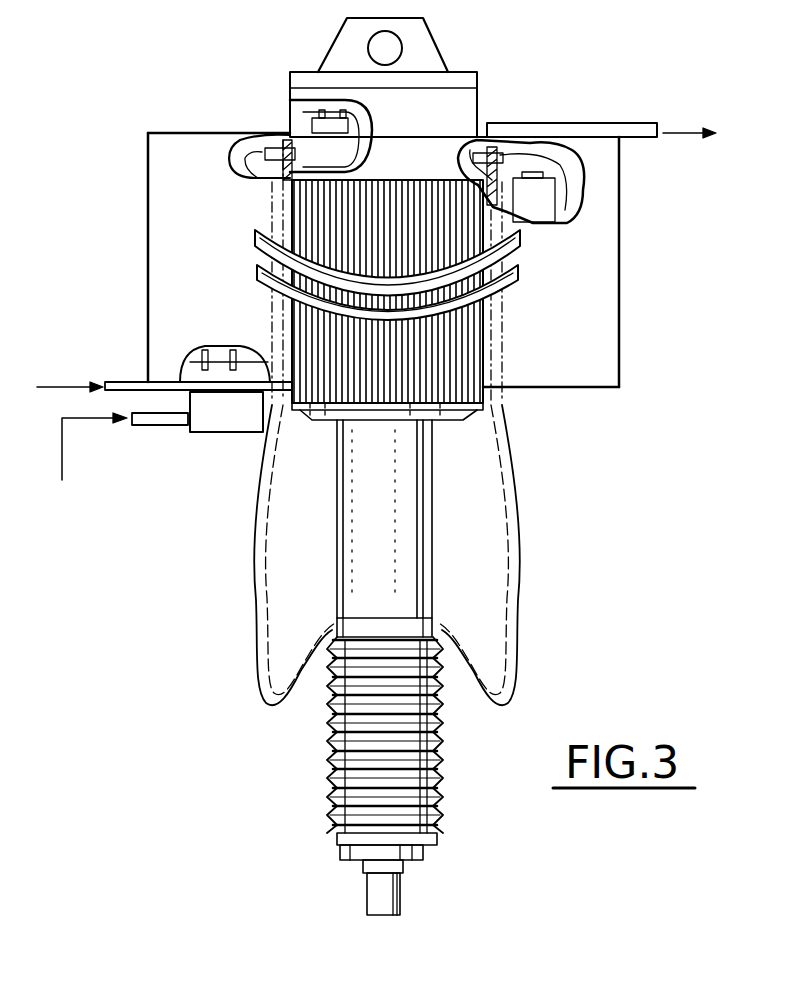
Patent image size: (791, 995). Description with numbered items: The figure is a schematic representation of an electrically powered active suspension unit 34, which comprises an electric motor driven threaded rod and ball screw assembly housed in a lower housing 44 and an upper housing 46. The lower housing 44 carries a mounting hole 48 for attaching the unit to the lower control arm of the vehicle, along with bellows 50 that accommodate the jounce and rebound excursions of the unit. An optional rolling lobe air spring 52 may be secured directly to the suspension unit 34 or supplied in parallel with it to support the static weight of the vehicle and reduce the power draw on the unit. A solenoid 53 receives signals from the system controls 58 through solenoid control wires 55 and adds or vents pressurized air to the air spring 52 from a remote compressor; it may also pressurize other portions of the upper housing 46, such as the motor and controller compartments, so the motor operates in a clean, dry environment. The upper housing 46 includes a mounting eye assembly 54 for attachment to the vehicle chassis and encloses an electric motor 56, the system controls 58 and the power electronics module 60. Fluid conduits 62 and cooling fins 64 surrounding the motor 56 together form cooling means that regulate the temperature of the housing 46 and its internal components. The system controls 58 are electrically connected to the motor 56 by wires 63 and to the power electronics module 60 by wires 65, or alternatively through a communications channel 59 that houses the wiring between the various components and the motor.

The suspension unit 34 is at (455, 458).
The lower housing 44 is at (435, 595).
The upper housing 46 is at (160, 132).
The mounting hole 48 is at (367, 890).
The bellows 50 is at (330, 732).
The rolling lobe air spring 52 is at (255, 553).
The solenoid 53 is at (230, 433).
The mounting eye assembly 54 is at (368, 46).
The solenoid control wires 55 is at (180, 382).
The electric motor 56 is at (318, 418).
The system controls 58 is at (148, 233).
The communications channel 59 is at (507, 287).
The power electronics module 60 is at (610, 248).
The fluid conduits 62 is at (177, 420).
The wires 63 is at (250, 153).
The cooling fins 64 is at (463, 107).
The wires 65 is at (520, 178).